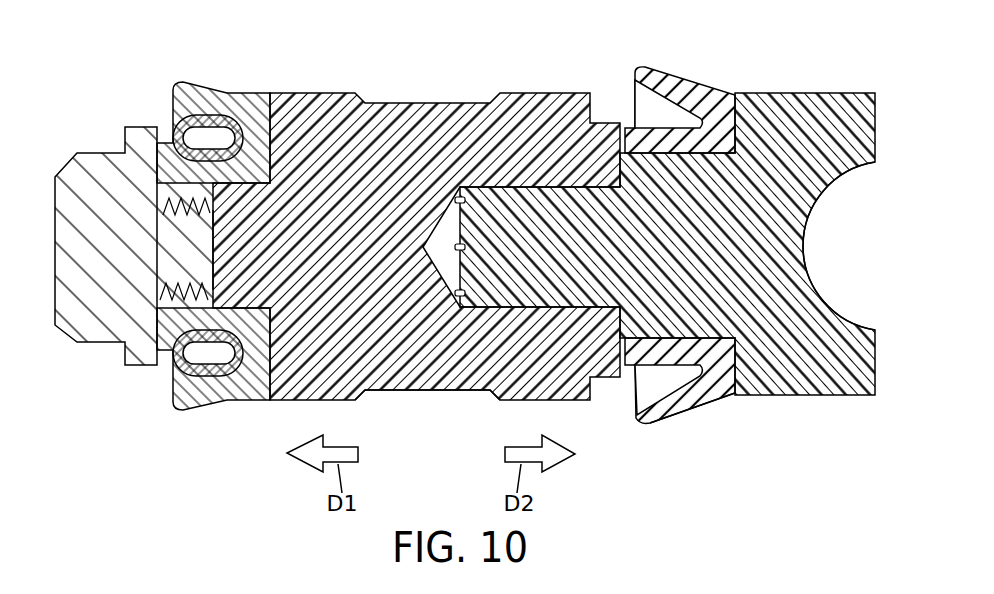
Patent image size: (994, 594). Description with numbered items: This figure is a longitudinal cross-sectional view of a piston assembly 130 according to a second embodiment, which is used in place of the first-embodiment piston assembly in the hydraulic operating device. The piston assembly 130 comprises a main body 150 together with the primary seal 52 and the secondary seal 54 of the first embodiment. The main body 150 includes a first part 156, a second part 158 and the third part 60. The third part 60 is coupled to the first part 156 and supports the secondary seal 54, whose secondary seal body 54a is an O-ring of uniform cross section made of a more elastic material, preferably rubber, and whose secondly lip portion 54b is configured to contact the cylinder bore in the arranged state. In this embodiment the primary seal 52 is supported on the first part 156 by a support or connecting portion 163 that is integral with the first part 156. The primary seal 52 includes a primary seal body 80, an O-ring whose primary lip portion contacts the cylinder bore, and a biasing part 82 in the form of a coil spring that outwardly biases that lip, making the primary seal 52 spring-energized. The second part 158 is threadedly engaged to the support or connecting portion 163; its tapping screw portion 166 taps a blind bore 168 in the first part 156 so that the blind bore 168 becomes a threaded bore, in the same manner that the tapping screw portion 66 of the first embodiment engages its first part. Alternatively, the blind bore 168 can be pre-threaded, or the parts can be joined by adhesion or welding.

The second part 158 is at (90, 148).
The blind bore 168 is at (192, 212).
The tapping screw portion 166 is at (158, 303).
The biasing part 82 is at (189, 110).
The primary seal 52 is at (219, 76).
The primary seal body 80 is at (213, 404).
The support or connecting portion 163 is at (174, 368).
The main body 150 is at (416, 251).
The first part 156 is at (459, 399).
The piston assembly 130 is at (665, 260).
The third part 60 is at (816, 84).
The secondary seal 54 is at (696, 68).
The secondary seal body 54a is at (708, 400).
The secondly lip portion 54b is at (664, 407).
The tapping screw portion 66 is at (668, 371).